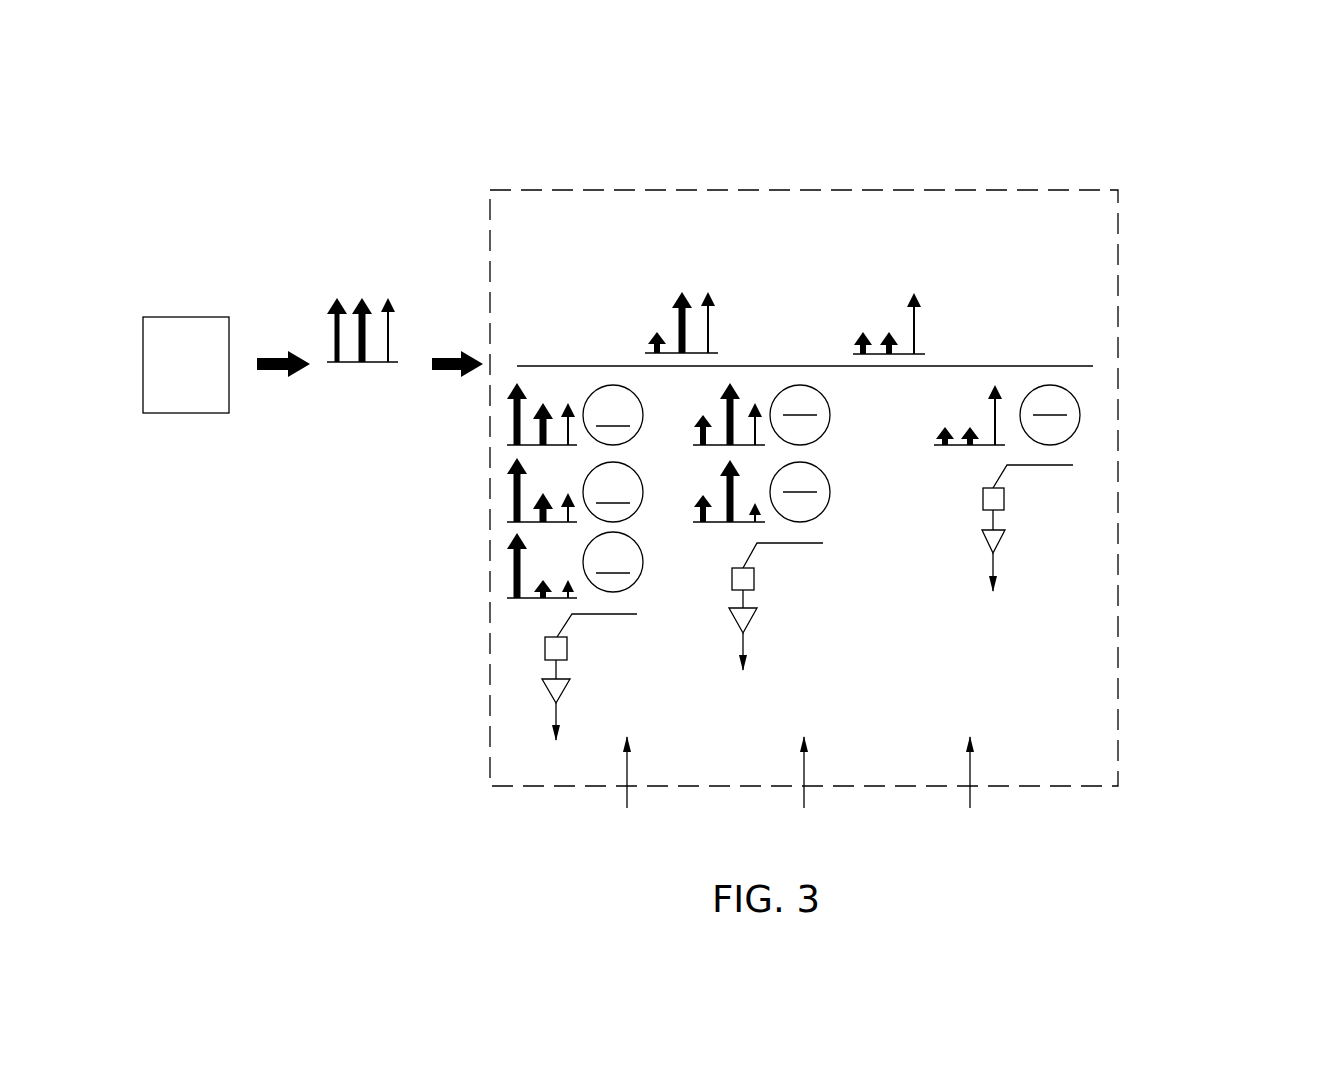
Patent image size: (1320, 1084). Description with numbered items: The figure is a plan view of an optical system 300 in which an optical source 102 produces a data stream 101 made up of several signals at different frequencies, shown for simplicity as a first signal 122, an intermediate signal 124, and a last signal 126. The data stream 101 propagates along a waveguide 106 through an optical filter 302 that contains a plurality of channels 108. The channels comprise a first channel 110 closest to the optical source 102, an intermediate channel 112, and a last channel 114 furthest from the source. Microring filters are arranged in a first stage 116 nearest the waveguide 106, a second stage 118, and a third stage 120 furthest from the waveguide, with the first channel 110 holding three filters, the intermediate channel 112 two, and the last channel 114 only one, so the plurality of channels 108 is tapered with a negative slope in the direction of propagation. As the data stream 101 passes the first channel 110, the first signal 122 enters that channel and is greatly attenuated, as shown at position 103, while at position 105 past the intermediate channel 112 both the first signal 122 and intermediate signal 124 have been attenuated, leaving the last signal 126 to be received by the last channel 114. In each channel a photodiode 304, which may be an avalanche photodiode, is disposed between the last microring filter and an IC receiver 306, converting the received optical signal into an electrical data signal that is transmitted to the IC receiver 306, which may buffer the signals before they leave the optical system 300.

The optical system 300 is at (1162, 132).
The optical filter 302 is at (547, 190).
The optical source 102 is at (166, 376).
The data stream 101 is at (346, 260).
The position 103 is at (638, 295).
The position 105 is at (851, 296).
The waveguide 106 is at (1055, 366).
The plurality of channels 108 is at (783, 552).
The first stage 116 is at (467, 413).
The second stage 118 is at (467, 488).
The third stage 120 is at (467, 565).
The first signal 122 is at (518, 607).
The intermediate signal 124 is at (740, 532).
The last signal 126 is at (972, 488).
The photodiode 304 is at (1005, 499).
The IC receiver 306 is at (1029, 555).
The first channel 110 is at (627, 787).
The intermediate channel 112 is at (805, 787).
The last channel 114 is at (971, 787).